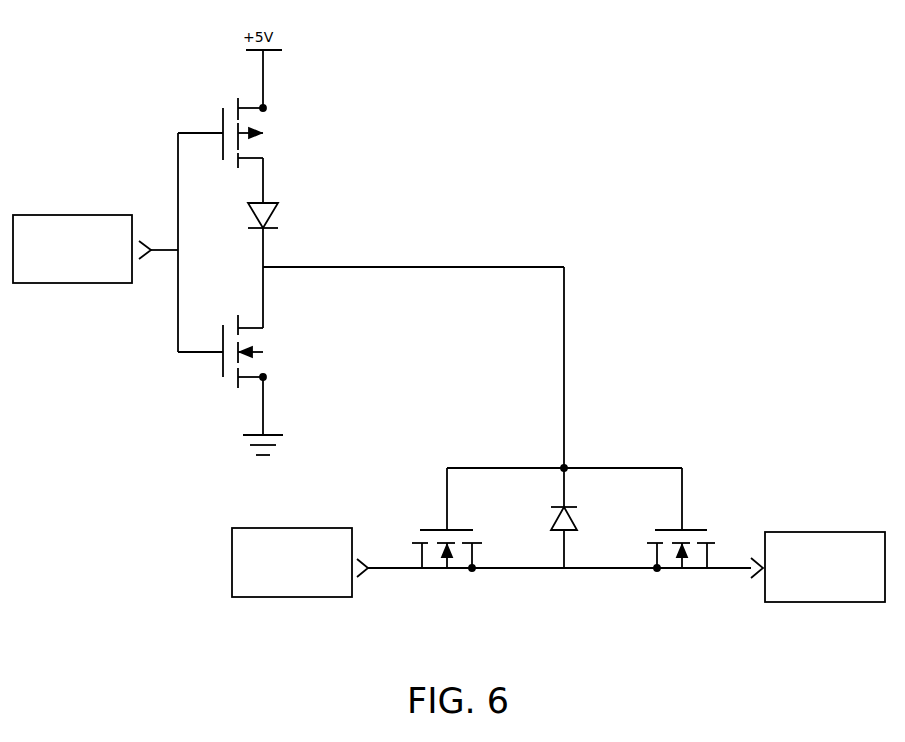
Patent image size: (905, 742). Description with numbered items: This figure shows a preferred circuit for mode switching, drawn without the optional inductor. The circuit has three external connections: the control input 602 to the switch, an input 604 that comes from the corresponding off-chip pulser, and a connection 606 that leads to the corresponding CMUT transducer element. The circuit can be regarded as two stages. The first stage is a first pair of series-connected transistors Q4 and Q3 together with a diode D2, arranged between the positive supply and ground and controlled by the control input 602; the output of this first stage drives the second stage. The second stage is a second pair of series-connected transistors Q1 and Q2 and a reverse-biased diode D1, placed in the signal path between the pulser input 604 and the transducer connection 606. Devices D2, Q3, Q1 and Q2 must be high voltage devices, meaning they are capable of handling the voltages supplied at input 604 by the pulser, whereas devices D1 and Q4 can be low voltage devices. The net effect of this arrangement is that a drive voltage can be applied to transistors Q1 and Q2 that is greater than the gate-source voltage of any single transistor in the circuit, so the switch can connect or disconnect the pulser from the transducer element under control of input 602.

The control input 602 is at (47, 267).
The input from off-chip pulser 604 is at (267, 580).
The connection to CMUT transducer element 606 is at (800, 583).
The transistor Q1 is at (439, 519).
The transistor Q2 is at (683, 519).
The transistor Q3 is at (240, 351).
The transistor Q4 is at (240, 133).
The diode D1 is at (546, 518).
The diode D2 is at (273, 207).